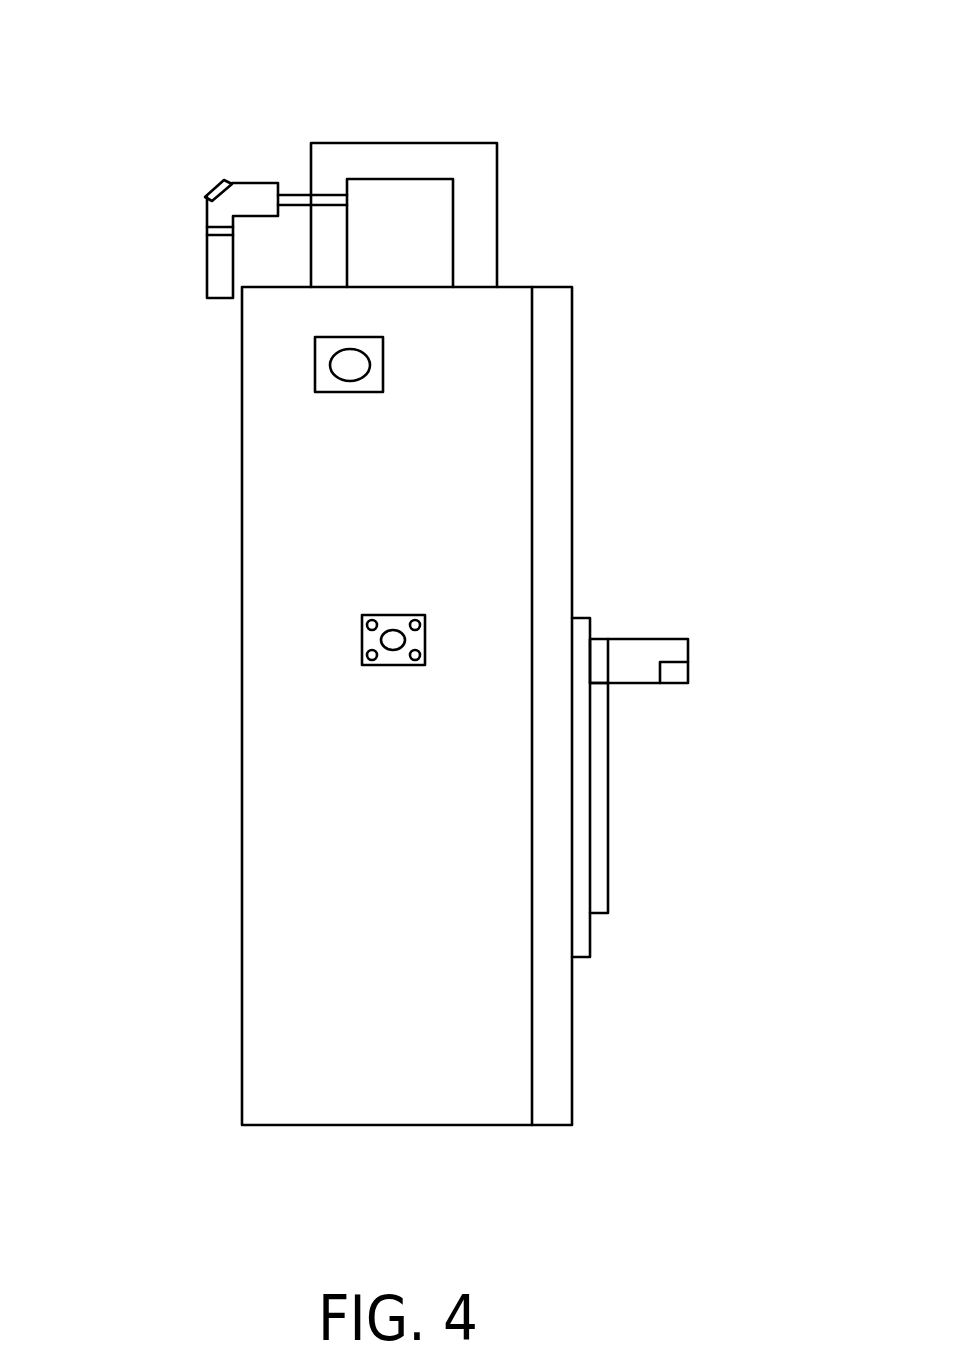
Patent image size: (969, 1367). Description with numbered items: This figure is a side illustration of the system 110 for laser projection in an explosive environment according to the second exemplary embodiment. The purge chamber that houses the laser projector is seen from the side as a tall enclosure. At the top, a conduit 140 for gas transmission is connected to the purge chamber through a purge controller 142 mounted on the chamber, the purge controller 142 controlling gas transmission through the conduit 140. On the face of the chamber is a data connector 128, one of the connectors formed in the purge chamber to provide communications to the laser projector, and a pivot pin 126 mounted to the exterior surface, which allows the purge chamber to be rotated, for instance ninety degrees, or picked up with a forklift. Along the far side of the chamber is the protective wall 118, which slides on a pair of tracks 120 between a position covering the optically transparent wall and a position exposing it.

The system for laser projection in an explosive environment 110 is at (513, 562).
The protective wall 118 is at (608, 913).
The tracks 120 is at (592, 618).
The pivot pin 126 is at (362, 640).
The data connector 128 is at (315, 372).
The conduit 140 is at (303, 145).
The purge controller 142 is at (420, 143).